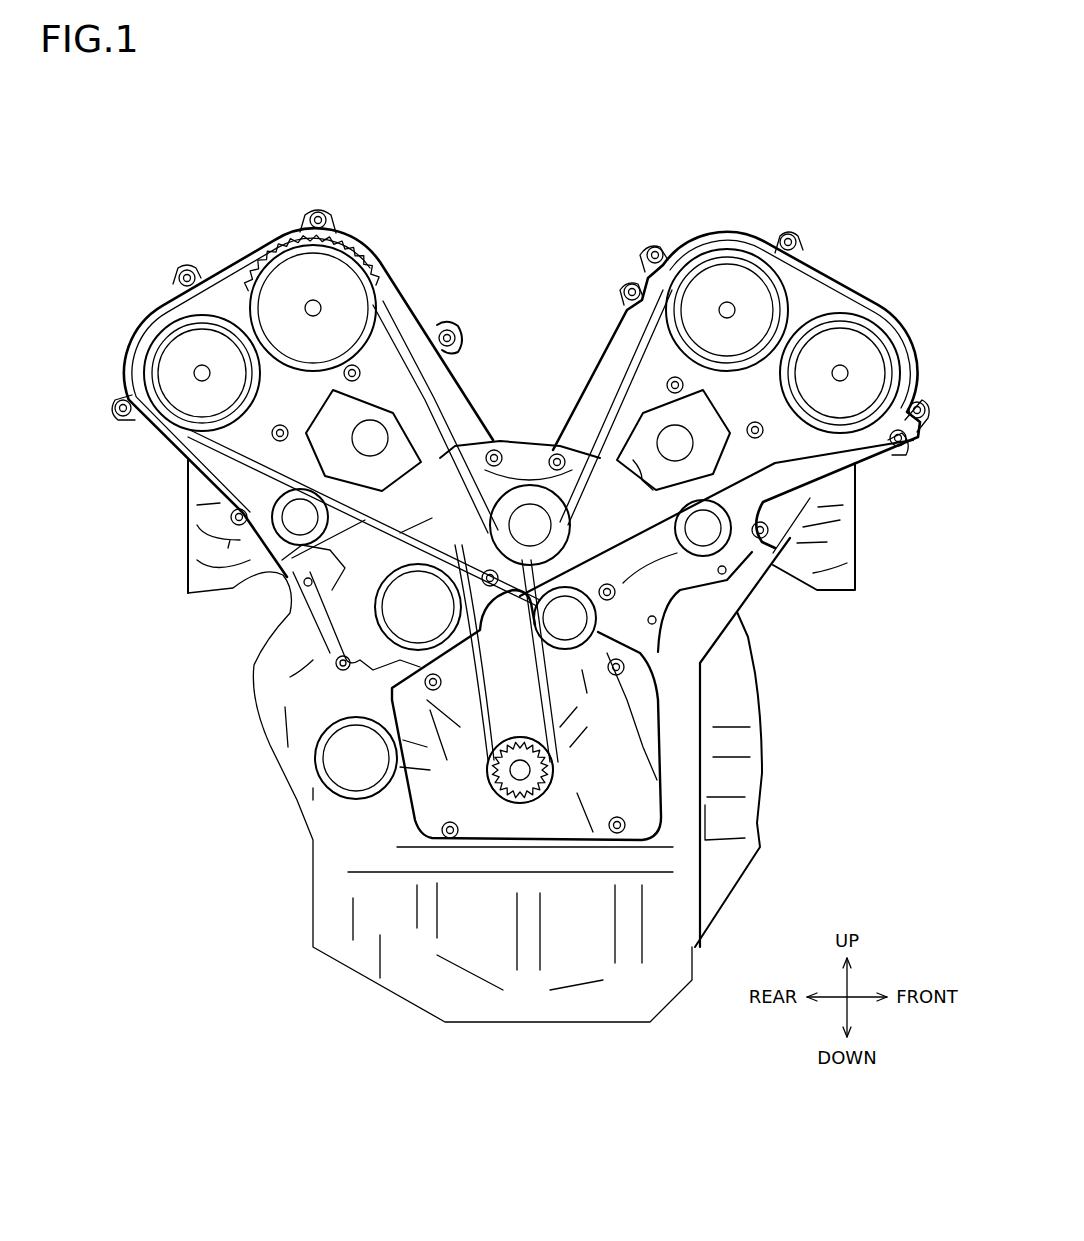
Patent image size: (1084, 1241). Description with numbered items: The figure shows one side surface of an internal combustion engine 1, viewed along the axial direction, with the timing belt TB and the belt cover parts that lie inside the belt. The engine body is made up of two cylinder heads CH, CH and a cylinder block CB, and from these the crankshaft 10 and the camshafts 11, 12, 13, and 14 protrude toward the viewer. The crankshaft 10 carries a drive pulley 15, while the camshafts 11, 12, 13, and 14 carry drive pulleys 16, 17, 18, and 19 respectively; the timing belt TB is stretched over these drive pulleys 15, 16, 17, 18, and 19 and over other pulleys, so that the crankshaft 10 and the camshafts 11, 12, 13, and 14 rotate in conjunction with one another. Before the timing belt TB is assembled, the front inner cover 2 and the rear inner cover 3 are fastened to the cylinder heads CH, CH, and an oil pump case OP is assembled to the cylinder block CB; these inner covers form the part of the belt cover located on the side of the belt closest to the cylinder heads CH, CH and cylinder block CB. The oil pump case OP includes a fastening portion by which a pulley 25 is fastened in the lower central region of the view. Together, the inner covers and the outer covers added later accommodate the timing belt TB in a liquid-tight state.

The internal combustion engine 1 is at (538, 178).
The front inner cover 2 is at (625, 317).
The rear inner cover 3 is at (418, 307).
The timing belt TB is at (445, 422).
The cylinder block CB is at (695, 683).
The cylinder head CH is at (195, 547).
The oil pump case OP is at (667, 748).
The crankshaft 10 is at (525, 772).
The drive pulley 15 is at (547, 783).
The camshaft 11 is at (840, 373).
The camshaft 12 is at (727, 310).
The camshaft 13 is at (313, 308).
The camshaft 14 is at (215, 290).
The drive pulley 16 is at (880, 347).
The drive pulley 17 is at (730, 265).
The drive pulley 18 is at (340, 272).
The drive pulley 19 is at (172, 338).
The pulley 25 is at (600, 635).